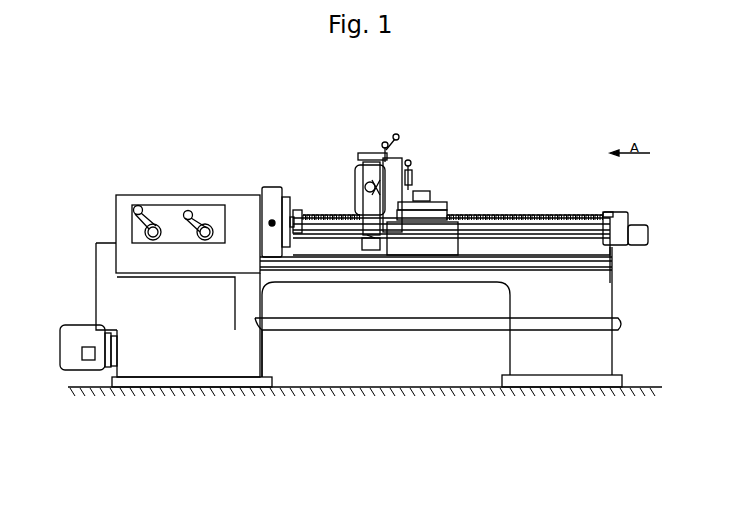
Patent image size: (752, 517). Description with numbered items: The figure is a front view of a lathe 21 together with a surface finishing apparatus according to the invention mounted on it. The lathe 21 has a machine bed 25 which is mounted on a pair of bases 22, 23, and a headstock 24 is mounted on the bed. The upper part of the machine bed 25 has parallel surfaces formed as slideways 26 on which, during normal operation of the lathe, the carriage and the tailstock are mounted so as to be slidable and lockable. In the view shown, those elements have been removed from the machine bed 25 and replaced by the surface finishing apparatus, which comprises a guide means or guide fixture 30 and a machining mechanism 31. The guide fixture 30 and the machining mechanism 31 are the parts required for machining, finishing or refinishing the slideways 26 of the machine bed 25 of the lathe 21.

The lathe 21 is at (230, 173).
The base 22 is at (263, 353).
The base 23 is at (607, 348).
The headstock 24 is at (177, 197).
The machine bed 25 is at (605, 292).
The slideway 26 is at (610, 260).
The guide means or guide fixture 30 is at (540, 212).
The machining mechanism 31 is at (425, 169).